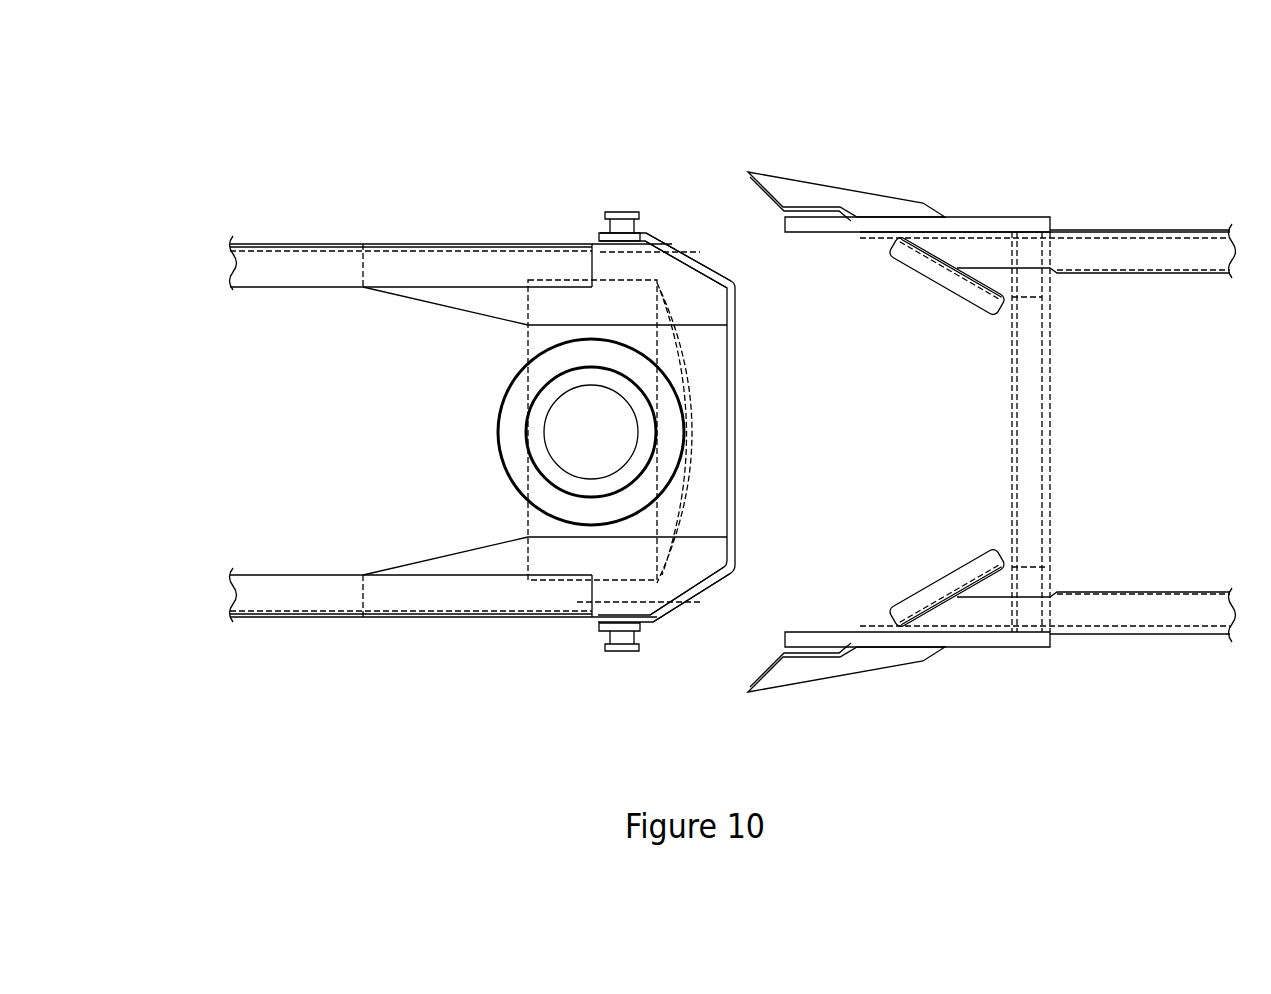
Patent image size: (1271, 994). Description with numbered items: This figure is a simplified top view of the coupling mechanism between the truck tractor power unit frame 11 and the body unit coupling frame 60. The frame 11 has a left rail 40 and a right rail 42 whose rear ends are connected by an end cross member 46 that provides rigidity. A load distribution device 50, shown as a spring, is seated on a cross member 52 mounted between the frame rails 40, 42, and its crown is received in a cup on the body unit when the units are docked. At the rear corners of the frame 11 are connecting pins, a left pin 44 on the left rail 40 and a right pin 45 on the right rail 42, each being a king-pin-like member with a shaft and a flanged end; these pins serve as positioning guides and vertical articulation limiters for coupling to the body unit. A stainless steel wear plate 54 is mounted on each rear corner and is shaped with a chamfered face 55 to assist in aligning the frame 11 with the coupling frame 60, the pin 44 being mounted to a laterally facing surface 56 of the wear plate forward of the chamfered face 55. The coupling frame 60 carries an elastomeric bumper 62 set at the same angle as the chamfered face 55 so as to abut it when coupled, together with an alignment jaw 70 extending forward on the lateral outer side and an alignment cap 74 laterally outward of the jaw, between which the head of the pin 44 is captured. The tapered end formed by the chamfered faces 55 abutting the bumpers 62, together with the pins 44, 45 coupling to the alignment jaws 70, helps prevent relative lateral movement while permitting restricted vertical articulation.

The frame 11 is at (288, 222).
The left rail 40 is at (340, 620).
The right rail 42 is at (418, 244).
The left pin 44 is at (622, 651).
The right pin 45 is at (620, 212).
The end cross member 46 is at (730, 440).
The load distribution device 50 is at (500, 412).
The cross member 52 is at (528, 340).
The wear plate 54 is at (735, 572).
The chamfered face 55 is at (688, 254).
The laterally facing surface 56 is at (640, 612).
The body unit coupling frame 60 is at (1090, 195).
The bumper 62 is at (965, 306).
The alignment jaw 70 is at (962, 217).
The alignment cap 74 is at (797, 178).